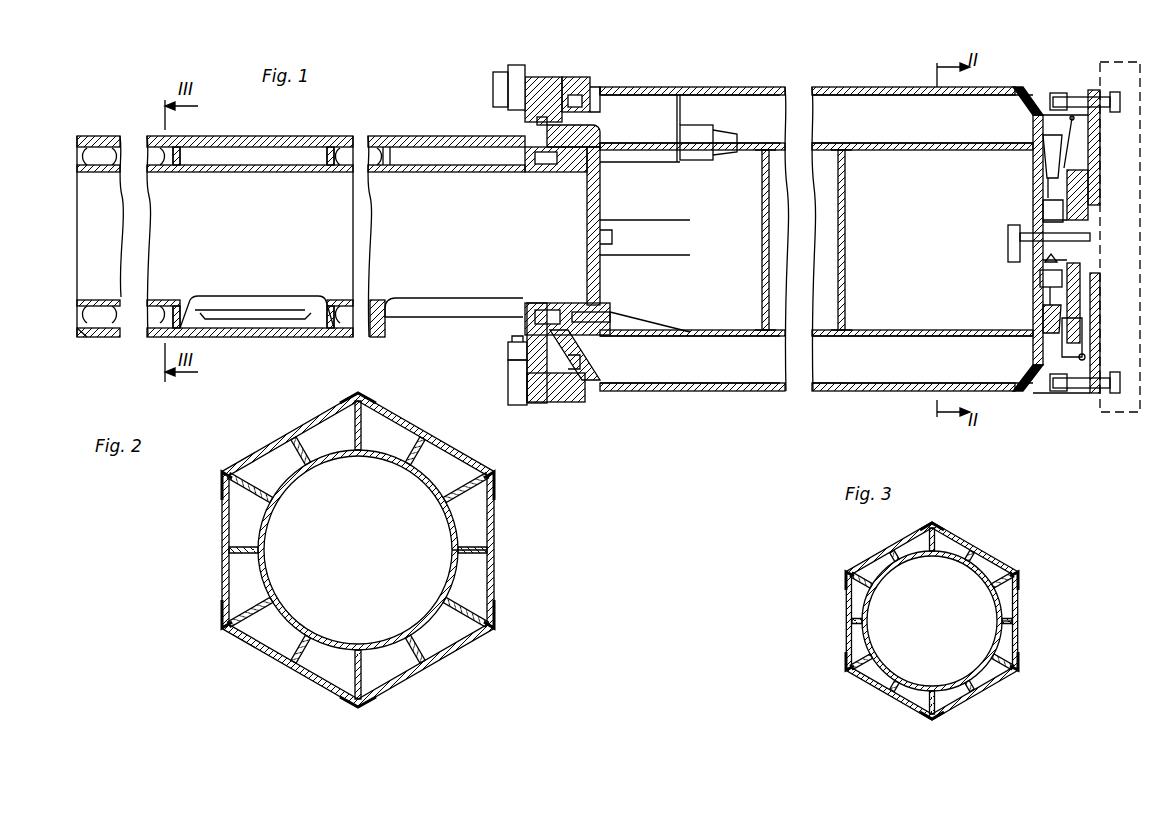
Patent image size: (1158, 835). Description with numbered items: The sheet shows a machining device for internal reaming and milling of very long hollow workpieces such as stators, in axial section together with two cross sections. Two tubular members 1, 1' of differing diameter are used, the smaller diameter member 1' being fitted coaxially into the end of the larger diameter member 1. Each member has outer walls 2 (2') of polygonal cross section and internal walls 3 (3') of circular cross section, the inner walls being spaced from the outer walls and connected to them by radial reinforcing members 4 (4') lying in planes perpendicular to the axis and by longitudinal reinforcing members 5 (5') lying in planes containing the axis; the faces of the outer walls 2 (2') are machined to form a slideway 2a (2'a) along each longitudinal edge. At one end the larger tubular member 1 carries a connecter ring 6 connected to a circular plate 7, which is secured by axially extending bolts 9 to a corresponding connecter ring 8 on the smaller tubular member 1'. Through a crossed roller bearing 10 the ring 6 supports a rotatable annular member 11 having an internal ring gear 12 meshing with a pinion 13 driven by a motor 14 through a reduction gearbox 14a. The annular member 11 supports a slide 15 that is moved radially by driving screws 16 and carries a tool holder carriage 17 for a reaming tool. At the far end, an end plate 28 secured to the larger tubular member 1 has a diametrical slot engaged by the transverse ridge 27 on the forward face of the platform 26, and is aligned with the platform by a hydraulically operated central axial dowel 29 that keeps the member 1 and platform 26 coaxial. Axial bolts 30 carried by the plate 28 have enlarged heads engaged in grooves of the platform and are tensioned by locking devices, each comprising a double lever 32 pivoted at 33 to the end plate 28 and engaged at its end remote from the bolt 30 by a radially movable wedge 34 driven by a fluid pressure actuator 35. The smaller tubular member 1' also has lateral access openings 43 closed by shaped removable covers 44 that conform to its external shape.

In FIG. 1, the larger tubular member 1 is at (821, 279).
In FIG. 2, the larger tubular member 1 is at (322, 550).
In FIG. 1, the smaller tubular member 1' is at (233, 268).
In FIG. 3, the smaller tubular member 1' is at (902, 621).
In FIG. 1, the outer walls 2 is at (807, 253).
In FIG. 2, the outer walls 2 is at (377, 550).
In FIG. 1, the outer walls 2' is at (301, 217).
In FIG. 3, the outer walls 2' is at (954, 621).
In FIG. 2, the slideway 2a is at (490, 626).
In FIG. 3, the slideway 2'a is at (956, 621).
In FIG. 1, the internal walls 3 is at (816, 239).
In FIG. 2, the internal walls 3 is at (358, 550).
In FIG. 1, the internal walls 3' is at (301, 235).
In FIG. 3, the internal walls 3' is at (932, 621).
In FIG. 1, the radial reinforcing members 4 is at (823, 256).
In FIG. 1, the radial reinforcing members 4' is at (253, 237).
In FIG. 2, the longitudinal reinforcing members 5 is at (492, 531).
In FIG. 3, the longitudinal reinforcing members 5' is at (982, 626).
In FIG. 1, the connecter ring 6 is at (556, 316).
In FIG. 1, the circular plate 7 is at (585, 220).
In FIG. 1, the connecter ring 8 is at (560, 170).
In FIG. 1, the bolts 9 is at (616, 300).
In FIG. 1, the crossed roller bearing 10 is at (554, 402).
In FIG. 1, the rotatable annular member 11 is at (535, 77).
In FIG. 1, the internal ring gear 12 is at (578, 400).
In FIG. 1, the pinion 13 is at (581, 92).
In FIG. 1, the motor 14 is at (732, 154).
In FIG. 1, the reduction gearbox 14a is at (668, 150).
In FIG. 1, the slide 15 is at (515, 68).
In FIG. 1, the driving screws 16 is at (508, 356).
In FIG. 1, the tool holder carriage 17 is at (493, 88).
In FIG. 1, the platform 26 is at (1106, 72).
In FIG. 1, the transverse ridge 27 is at (1106, 185).
In FIG. 1, the end plate 28 is at (1086, 276).
In FIG. 1, the dowel 29 is at (1088, 242).
In FIG. 1, the bolts 30 is at (1085, 392).
In FIG. 1, the double lever 32 is at (1076, 328).
In FIG. 1, the pivot 33 is at (1084, 358).
In FIG. 1, the wedge 34 is at (1042, 320).
In FIG. 1, the fluid pressure actuator 35 is at (1037, 282).
In FIG. 1, the lateral access openings 43 is at (428, 307).
In FIG. 1, the removable covers 44 is at (258, 295).